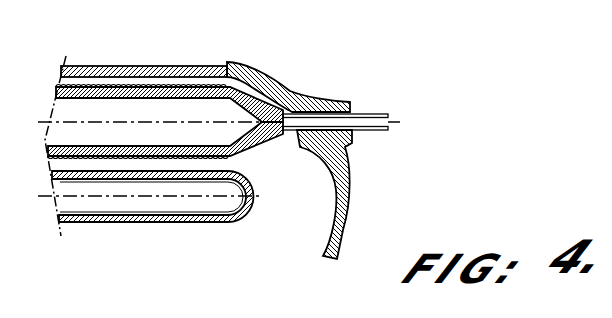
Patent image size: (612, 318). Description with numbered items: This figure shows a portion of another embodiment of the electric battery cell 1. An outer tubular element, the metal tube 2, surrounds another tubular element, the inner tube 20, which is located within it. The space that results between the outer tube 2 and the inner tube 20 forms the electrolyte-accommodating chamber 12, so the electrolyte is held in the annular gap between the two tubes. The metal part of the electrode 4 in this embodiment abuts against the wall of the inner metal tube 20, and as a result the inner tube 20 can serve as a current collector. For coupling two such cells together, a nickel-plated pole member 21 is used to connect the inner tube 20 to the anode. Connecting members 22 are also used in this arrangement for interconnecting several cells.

The electric battery cell 1 is at (184, 235).
The metal tube 2 is at (153, 133).
The electrode 4 is at (90, 156).
The electrolyte-accommodating chamber 12 is at (177, 79).
The inner tubular element 20 is at (165, 138).
The nickel-plated pole member 21 is at (384, 134).
The connecting members 22 is at (272, 75).